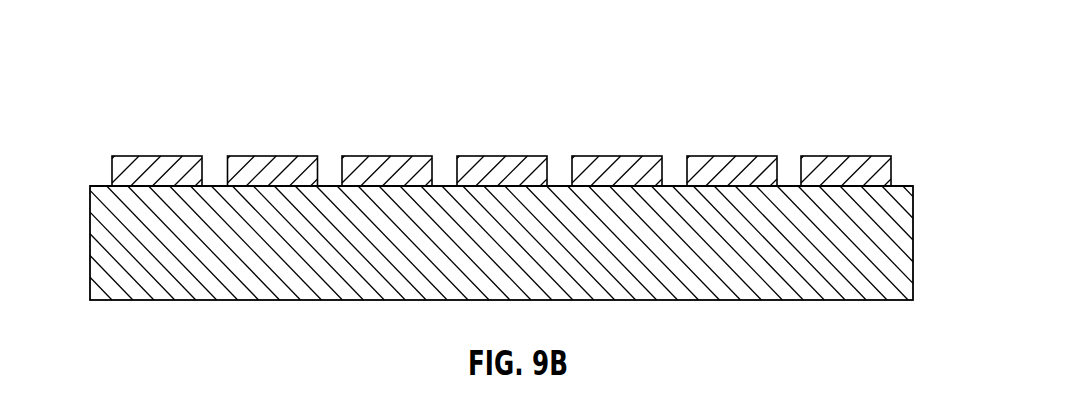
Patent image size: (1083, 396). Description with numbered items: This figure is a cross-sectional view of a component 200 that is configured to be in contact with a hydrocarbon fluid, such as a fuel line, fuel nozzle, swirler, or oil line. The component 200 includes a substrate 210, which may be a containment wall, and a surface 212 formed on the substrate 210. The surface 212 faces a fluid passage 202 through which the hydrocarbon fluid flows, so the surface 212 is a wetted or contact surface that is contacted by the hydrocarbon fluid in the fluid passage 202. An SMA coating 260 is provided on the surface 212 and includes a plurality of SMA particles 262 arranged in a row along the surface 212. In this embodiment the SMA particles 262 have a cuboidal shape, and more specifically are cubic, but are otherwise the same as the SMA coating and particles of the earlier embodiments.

The component 200 is at (147, 52).
The fluid passage 202 is at (757, 66).
The substrate 210 is at (900, 238).
The surface 212 is at (100, 180).
The SMA coating 260 is at (542, 142).
The SMA particles 262 is at (163, 163).